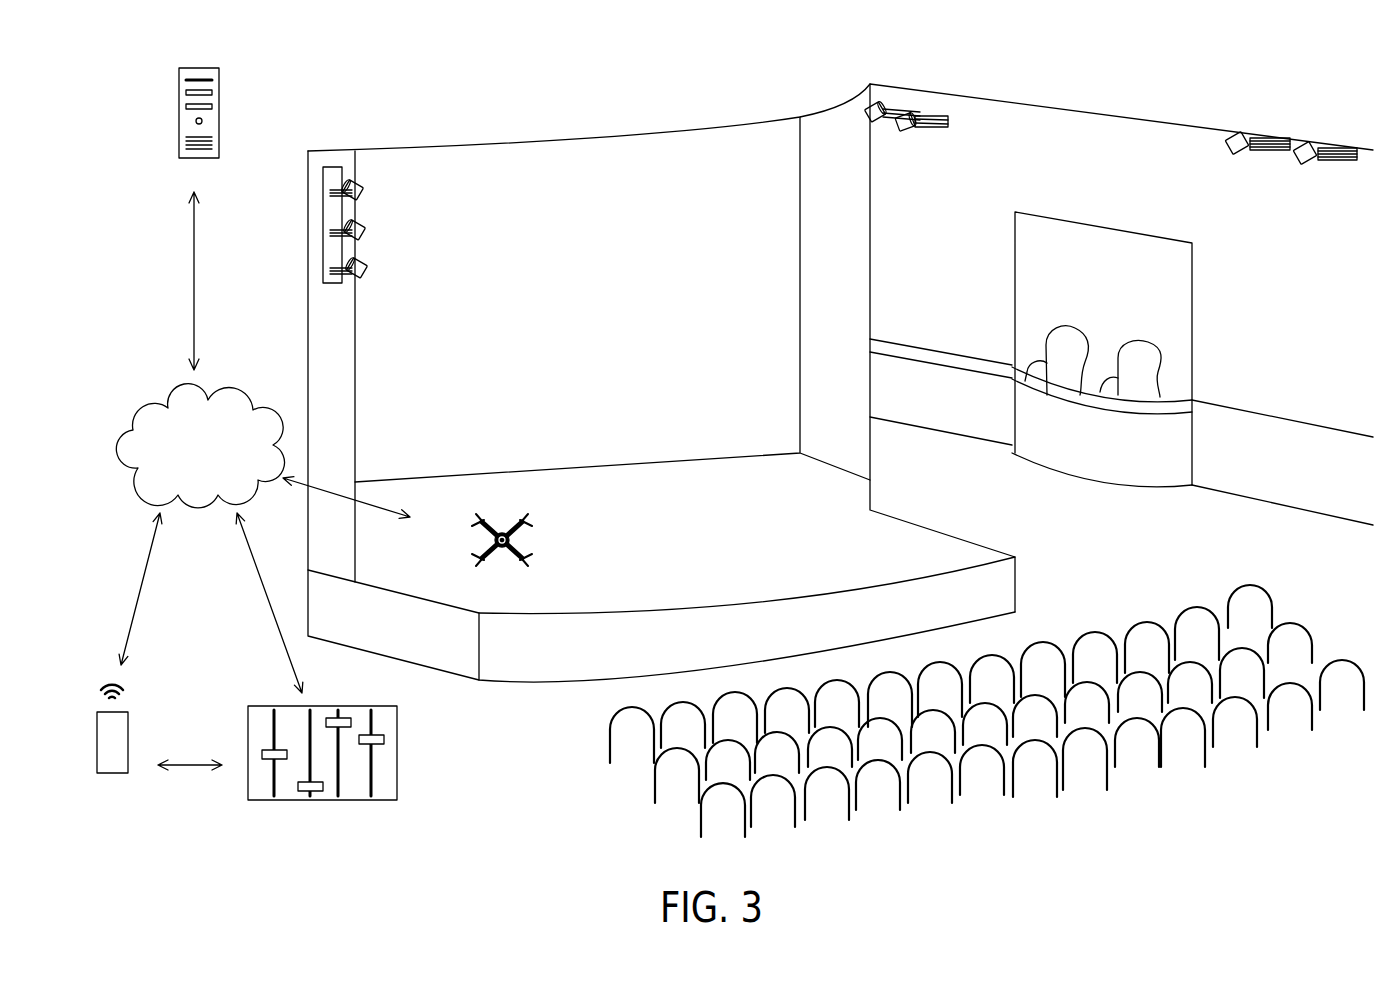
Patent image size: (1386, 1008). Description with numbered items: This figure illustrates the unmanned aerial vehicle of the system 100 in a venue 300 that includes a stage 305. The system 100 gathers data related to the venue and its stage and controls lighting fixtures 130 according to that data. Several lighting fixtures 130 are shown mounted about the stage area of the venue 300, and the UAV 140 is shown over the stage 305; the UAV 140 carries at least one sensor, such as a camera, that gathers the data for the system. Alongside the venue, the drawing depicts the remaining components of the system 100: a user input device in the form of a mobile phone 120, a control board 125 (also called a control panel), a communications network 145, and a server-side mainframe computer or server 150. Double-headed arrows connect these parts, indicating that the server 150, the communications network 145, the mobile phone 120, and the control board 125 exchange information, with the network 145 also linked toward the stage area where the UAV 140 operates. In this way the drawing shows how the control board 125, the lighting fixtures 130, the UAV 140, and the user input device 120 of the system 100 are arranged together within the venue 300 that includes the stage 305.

The system 100 is at (1141, 60).
The mobile phone 120 is at (128, 735).
The control board 125 is at (325, 706).
The lighting fixtures 130 is at (362, 187).
The UAV 140 is at (490, 538).
The communications network 145 is at (222, 397).
The server 150 is at (220, 72).
The venue 300 is at (1073, 541).
The stage 305 is at (726, 524).